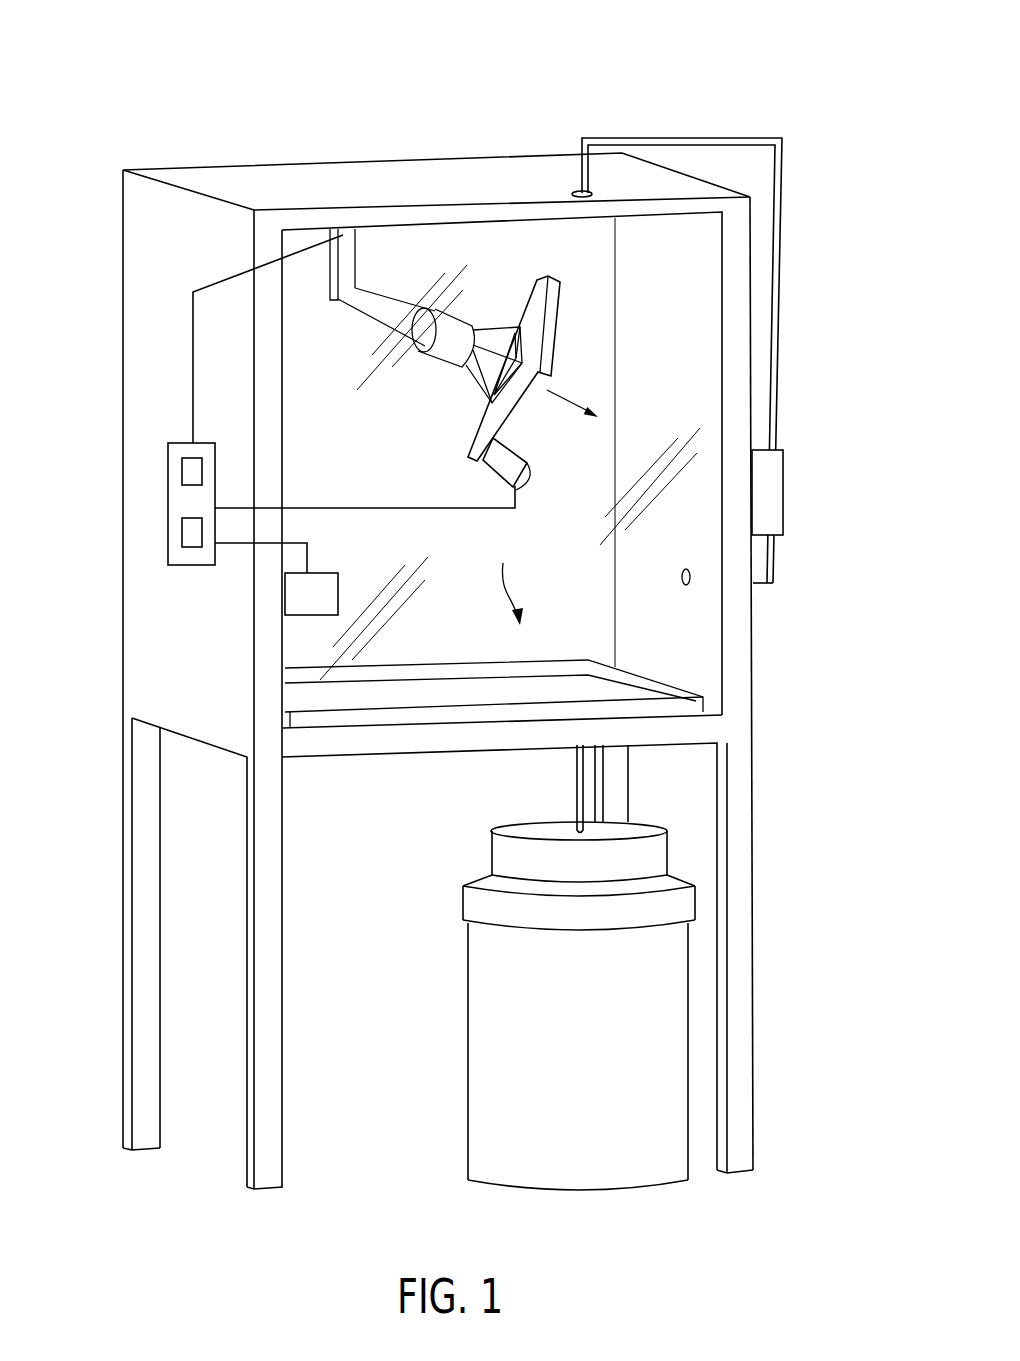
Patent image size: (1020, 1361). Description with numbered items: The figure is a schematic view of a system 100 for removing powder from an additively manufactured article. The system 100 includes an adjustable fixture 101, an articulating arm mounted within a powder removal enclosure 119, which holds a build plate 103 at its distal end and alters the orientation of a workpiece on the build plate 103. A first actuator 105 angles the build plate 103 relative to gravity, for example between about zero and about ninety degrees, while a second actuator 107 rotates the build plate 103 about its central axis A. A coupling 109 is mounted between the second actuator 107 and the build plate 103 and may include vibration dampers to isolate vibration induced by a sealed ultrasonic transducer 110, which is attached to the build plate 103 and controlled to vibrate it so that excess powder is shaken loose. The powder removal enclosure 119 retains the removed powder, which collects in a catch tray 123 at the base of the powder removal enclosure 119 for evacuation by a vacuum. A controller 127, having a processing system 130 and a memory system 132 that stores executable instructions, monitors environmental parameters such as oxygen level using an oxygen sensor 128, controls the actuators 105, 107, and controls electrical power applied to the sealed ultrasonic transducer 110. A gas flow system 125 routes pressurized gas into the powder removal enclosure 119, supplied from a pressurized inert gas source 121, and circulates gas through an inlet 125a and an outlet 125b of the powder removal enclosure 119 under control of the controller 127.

The system 100 is at (795, 88).
The adjustable fixture 101 is at (405, 260).
The build plate 103 is at (547, 333).
The first actuator 105 is at (347, 287).
The second actuator 107 is at (448, 348).
The coupling 109 is at (490, 340).
The sealed ultrasonic transducer 110 is at (522, 492).
The powder removal enclosure 119 is at (290, 185).
The inert gas source 121 is at (625, 1000).
The catch tray 123 is at (655, 697).
The gas flow system 125 is at (783, 470).
The inlet 125a is at (580, 190).
The outlet 125b is at (690, 575).
The controller 127 is at (167, 502).
The oxygen sensor 128 is at (307, 595).
The processing system 130 is at (183, 462).
The memory system 132 is at (182, 535).